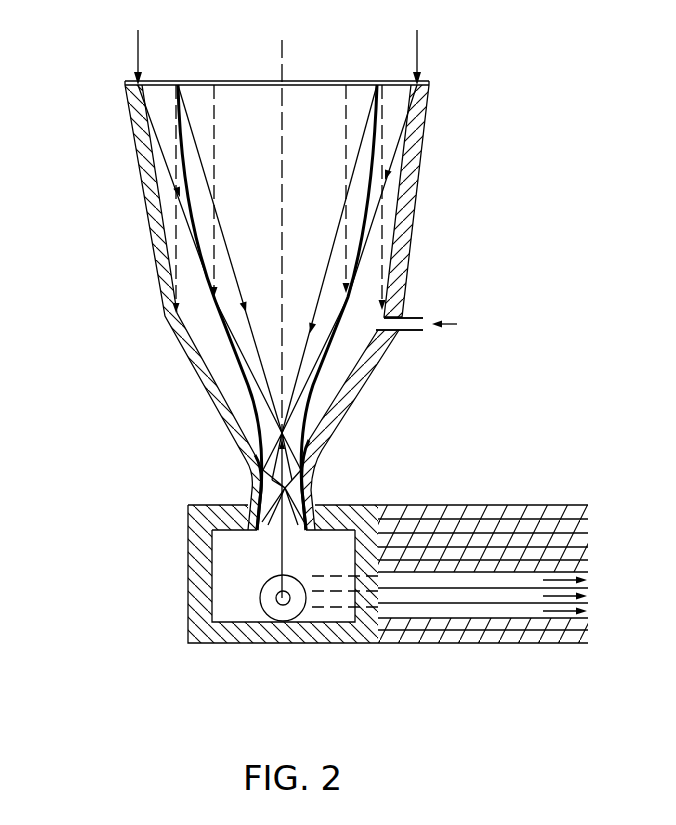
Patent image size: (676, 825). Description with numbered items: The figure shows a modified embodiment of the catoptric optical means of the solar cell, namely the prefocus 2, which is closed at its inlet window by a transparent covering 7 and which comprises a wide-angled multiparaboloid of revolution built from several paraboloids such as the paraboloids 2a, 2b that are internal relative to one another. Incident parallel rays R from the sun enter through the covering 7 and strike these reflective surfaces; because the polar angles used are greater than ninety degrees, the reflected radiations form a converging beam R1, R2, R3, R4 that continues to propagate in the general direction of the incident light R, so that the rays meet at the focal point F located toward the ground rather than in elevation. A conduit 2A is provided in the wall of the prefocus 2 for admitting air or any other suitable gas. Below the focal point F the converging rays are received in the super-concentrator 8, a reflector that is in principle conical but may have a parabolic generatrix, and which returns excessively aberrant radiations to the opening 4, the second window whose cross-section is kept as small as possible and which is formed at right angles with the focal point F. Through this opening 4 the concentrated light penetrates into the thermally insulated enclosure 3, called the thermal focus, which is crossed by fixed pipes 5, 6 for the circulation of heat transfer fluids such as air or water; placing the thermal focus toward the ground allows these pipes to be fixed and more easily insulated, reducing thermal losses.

The prefocus 2 is at (272, 307).
The paraboloid 2a is at (150, 190).
The paraboloid 2b is at (180, 147).
The conduit 2A is at (412, 329).
The thermally insulated enclosure 3 is at (197, 591).
The opening 4 is at (250, 492).
The pipe 5 is at (277, 614).
The pipe 6 is at (291, 601).
The transparent covering 7 is at (317, 80).
The super-concentrator 8 is at (311, 487).
The focal point F is at (253, 487).
The incident parallel rays R is at (284, 171).
The reflected ray R1 is at (349, 259).
The reflected ray R2 is at (329, 259).
The reflected ray R3 is at (230, 259).
The reflected ray R4 is at (210, 259).